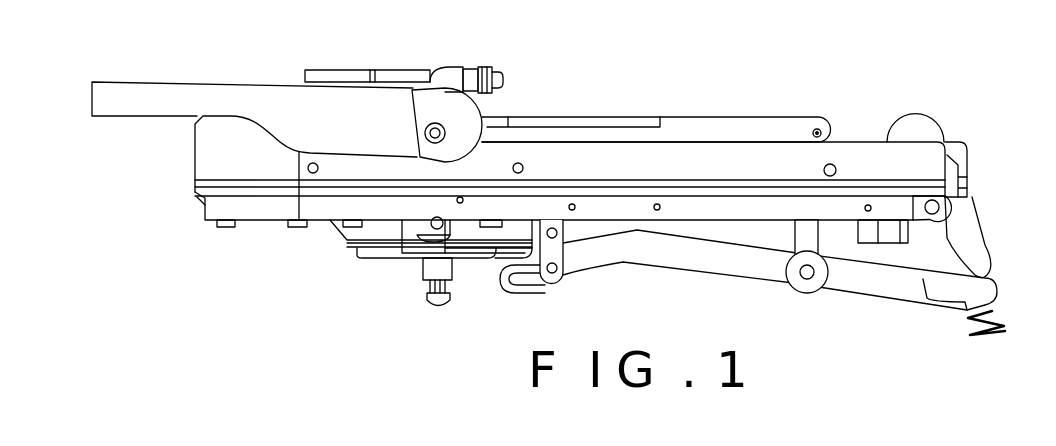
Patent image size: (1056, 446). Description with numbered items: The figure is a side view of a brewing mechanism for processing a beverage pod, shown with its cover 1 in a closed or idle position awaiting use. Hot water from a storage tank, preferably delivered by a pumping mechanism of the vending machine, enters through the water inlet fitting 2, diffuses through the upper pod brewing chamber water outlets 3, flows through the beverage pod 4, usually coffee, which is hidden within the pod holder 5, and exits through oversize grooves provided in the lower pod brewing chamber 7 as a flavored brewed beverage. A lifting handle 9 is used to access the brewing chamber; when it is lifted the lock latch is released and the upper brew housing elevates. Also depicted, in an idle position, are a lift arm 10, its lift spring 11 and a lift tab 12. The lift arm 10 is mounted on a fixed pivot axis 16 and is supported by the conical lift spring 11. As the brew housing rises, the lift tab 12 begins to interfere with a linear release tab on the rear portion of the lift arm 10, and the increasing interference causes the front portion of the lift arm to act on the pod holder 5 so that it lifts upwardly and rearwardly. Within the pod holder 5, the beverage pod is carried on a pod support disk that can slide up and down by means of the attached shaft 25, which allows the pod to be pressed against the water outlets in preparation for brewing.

The cover 1 is at (650, 88).
The water inlet fitting 2 is at (503, 80).
The upper pod brewing chamber water outlets 3 is at (520, 110).
The beverage pod 4 is at (345, 241).
The pod holder 5 is at (360, 252).
The lower pod brewing chamber 7 is at (475, 230).
The lifting handle 9 is at (230, 82).
The lift arm 10 is at (723, 277).
The lift spring 11 is at (987, 337).
The lift tab 12 is at (973, 228).
The fixed pivot axis 16 is at (807, 283).
The shaft 25 is at (437, 310).